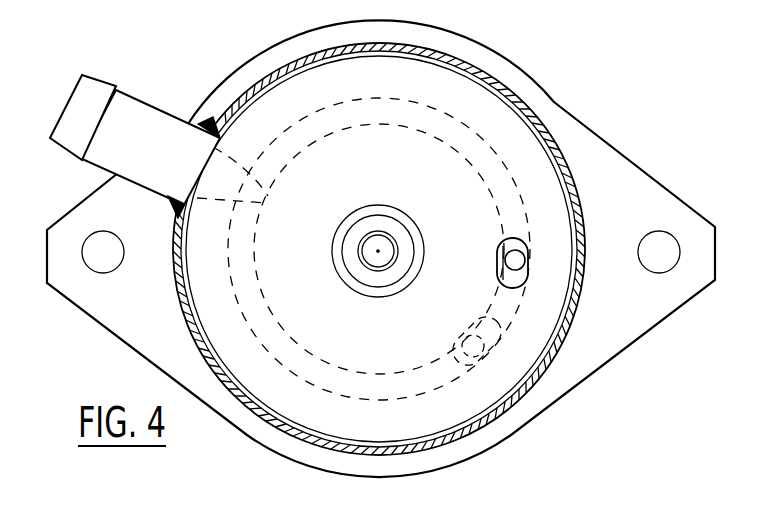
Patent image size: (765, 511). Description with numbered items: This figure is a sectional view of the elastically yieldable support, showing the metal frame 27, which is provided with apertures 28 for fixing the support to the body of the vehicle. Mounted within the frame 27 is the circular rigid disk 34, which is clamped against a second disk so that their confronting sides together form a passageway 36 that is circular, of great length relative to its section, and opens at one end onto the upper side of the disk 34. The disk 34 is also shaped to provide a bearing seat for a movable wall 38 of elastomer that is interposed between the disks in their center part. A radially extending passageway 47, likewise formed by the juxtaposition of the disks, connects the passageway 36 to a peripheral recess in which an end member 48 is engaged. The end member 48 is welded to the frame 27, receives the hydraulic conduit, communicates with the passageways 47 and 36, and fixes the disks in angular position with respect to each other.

The metal frame 27 is at (631, 188).
The apertures 28 is at (98, 248).
The upper rigid disk 34 is at (330, 92).
The passageway 36 is at (425, 120).
The movable wall 38 is at (393, 230).
The radially extending passageway 47 is at (216, 190).
The end member 48 is at (133, 115).